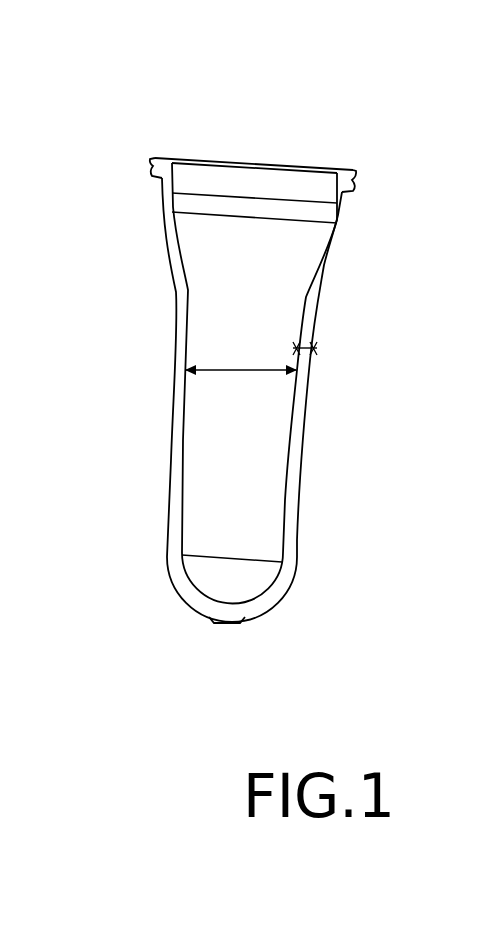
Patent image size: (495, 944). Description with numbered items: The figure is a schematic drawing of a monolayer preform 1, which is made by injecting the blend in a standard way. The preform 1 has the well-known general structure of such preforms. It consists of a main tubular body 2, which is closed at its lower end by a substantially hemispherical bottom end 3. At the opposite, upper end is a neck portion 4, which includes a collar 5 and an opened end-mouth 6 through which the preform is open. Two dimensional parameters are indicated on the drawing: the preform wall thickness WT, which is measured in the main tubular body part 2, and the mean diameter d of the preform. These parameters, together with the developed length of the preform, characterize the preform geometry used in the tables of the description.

The monolayer preform 1 is at (324, 487).
The main tubular body 2 is at (293, 453).
The substantially hemispherical bottom end 3 is at (278, 590).
The neck portion 4 is at (361, 184).
The collar 5 is at (155, 178).
The opened end-mouth 6 is at (254, 159).
The mean diameter of the preform d is at (241, 343).
The preform wall thickness WT is at (302, 340).